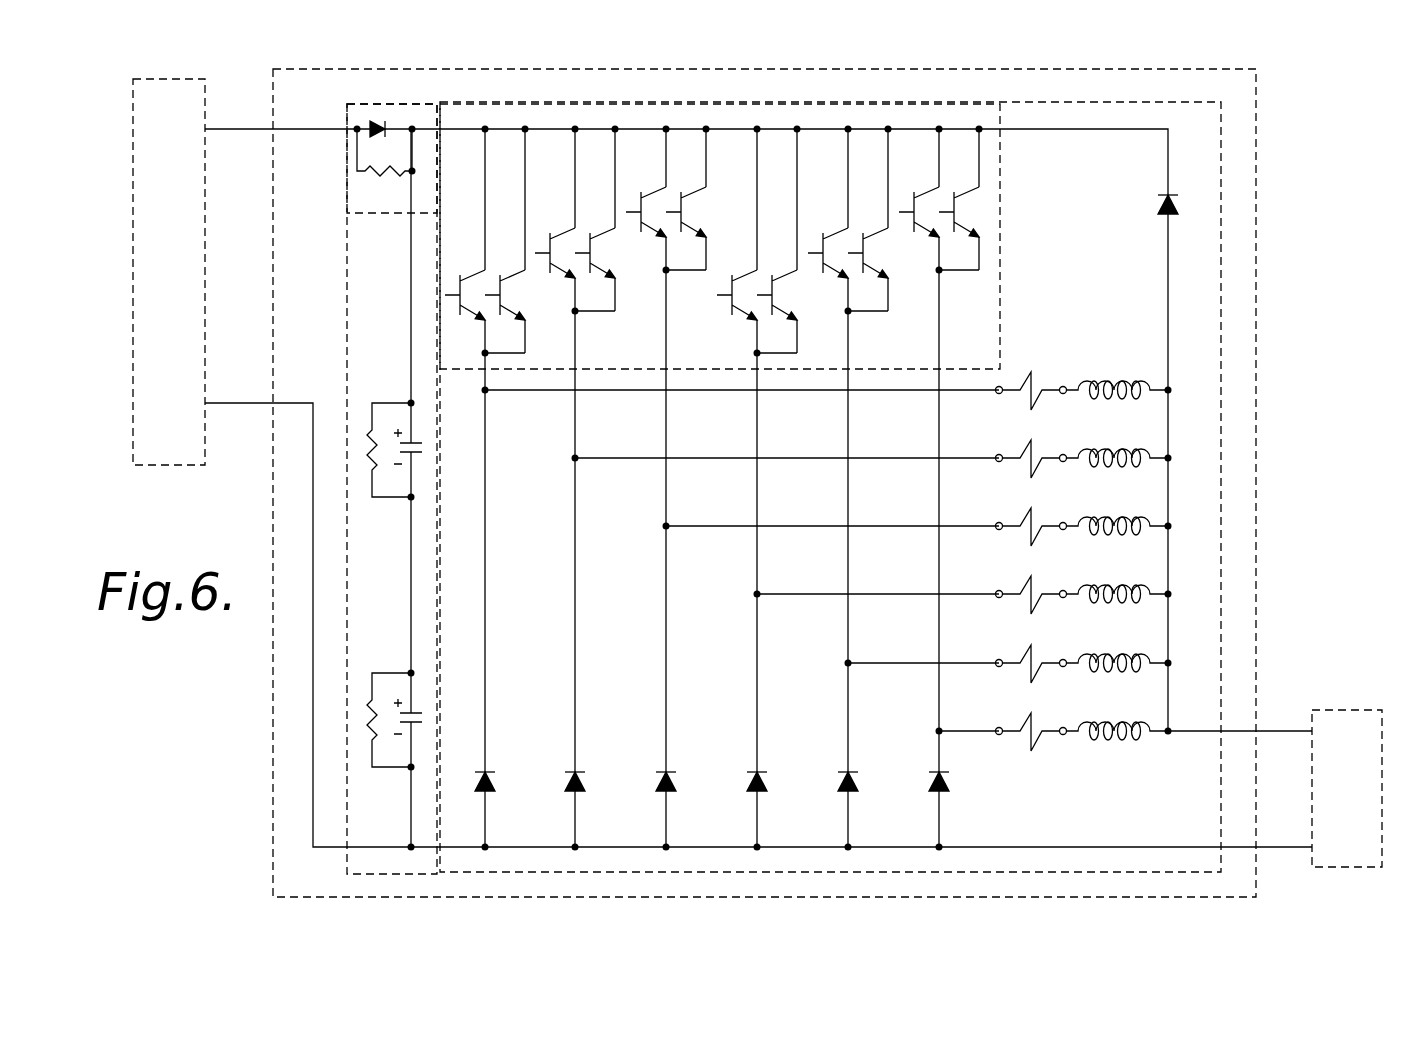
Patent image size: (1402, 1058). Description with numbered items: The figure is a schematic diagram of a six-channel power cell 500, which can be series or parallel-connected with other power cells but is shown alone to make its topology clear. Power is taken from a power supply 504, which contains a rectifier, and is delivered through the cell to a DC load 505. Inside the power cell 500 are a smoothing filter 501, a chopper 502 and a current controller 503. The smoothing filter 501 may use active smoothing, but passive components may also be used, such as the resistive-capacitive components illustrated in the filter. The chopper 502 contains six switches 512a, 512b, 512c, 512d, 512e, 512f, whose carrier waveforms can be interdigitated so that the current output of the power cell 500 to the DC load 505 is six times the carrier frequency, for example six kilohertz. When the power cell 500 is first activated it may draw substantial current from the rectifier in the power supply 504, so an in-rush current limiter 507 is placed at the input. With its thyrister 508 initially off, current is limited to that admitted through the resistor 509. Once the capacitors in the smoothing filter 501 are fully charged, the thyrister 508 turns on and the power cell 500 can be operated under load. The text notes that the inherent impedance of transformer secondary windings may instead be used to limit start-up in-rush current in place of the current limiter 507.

The six-channel power cell 500 is at (1258, 117).
The smoothing filter 501 is at (346, 649).
The chopper 502 is at (1001, 205).
The current controller 503 is at (1222, 311).
The power supply 504 is at (191, 78).
The DC load 505 is at (1352, 710).
The in-rush current limiter 507 is at (392, 104).
The thyrister 508 is at (368, 124).
The resistor 509 is at (387, 177).
The switch 512a is at (513, 275).
The switch 512b is at (603, 233).
The switch 512c is at (694, 192).
The switch 512d is at (785, 275).
The switch 512e is at (876, 233).
The switch 512f is at (967, 192).